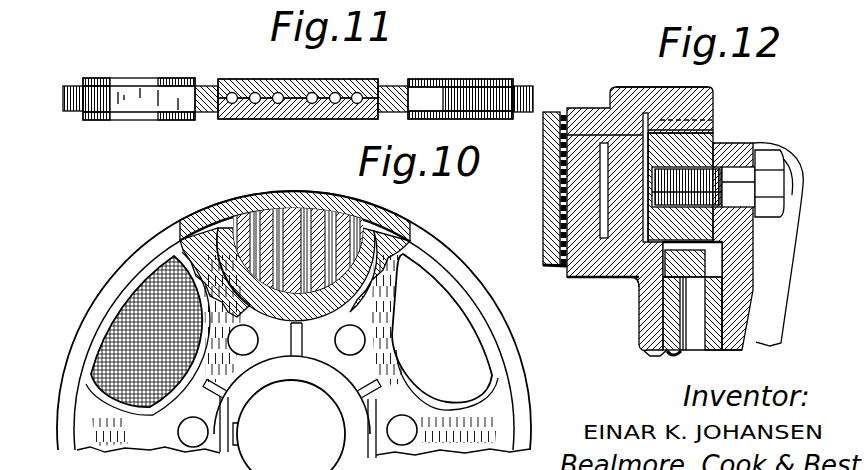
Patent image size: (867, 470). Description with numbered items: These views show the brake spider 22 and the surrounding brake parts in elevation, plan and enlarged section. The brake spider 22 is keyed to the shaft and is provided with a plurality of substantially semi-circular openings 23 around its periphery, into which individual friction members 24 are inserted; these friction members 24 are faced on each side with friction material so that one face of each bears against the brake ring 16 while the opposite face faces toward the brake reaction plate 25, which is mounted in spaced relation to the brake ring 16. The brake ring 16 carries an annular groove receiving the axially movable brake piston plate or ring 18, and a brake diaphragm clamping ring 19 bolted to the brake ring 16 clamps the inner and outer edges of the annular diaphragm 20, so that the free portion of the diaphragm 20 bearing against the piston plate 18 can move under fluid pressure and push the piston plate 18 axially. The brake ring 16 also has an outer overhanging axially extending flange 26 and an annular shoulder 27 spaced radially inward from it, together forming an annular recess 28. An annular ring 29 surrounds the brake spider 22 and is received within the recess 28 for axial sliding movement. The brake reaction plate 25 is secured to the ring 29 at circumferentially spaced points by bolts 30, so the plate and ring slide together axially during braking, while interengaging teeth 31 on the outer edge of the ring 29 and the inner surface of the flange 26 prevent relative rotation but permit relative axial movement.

In FIG. 12, the brake ring 16 is at (611, 270).
In FIG. 12, the brake piston plate or ring 18 is at (581, 208).
In FIG. 12, the brake diaphragm clamping ring 19 is at (543, 145).
In FIG. 12, the annular diaphragm 20 is at (543, 182).
In FIG. 11, the brake spider 22 is at (185, 97).
In FIG. 10, the brake spider 22 is at (437, 243).
In FIG. 10, the semi-circular openings 23 is at (514, 350).
In FIG. 11, the friction members 24 is at (226, 79).
In FIG. 12, the friction members 24 is at (673, 353).
In FIG. 10, the friction members 24 is at (133, 295).
In FIG. 12, the brake reaction plate 25 is at (741, 287).
In FIG. 12, the outer overhanging axially extending flange 26 is at (658, 93).
In FIG. 12, the annular shoulder 27 is at (632, 283).
In FIG. 12, the annular recess 28 is at (643, 145).
In FIG. 12, the annular ring 29 is at (714, 141).
In FIG. 12, the bolts 30 is at (741, 181).
In FIG. 12, the interengaging teeth 31 is at (719, 121).